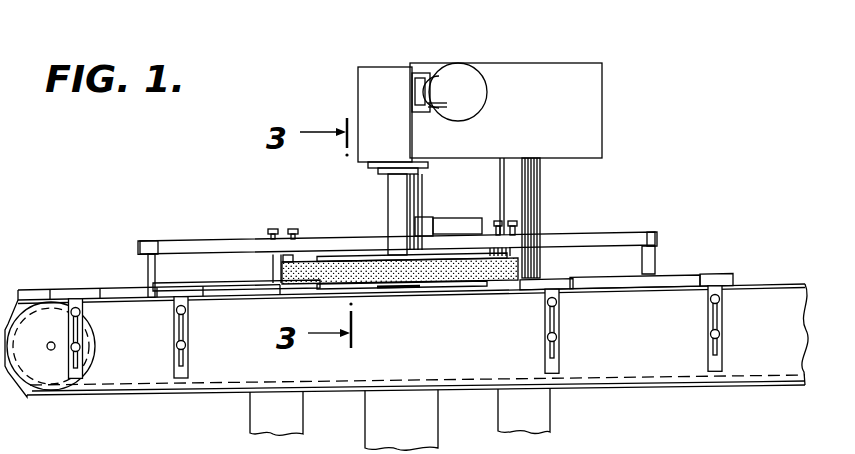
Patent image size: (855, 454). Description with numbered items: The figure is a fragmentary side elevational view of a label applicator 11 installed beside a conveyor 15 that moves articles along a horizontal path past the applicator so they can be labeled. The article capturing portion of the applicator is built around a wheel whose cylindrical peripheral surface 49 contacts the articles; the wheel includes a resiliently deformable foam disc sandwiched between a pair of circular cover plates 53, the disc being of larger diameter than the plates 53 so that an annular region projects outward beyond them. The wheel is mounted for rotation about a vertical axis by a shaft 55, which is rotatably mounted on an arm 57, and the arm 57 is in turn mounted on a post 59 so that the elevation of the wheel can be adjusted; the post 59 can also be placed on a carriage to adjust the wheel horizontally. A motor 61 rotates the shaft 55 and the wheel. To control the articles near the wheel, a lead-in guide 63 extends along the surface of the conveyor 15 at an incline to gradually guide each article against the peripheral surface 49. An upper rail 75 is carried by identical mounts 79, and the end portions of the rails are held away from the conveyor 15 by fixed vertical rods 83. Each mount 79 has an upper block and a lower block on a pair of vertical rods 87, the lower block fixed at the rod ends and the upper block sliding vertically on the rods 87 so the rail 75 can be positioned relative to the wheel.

The label applicator 11 is at (238, 171).
The conveyor 15 is at (790, 276).
The cylindrical peripheral surface 49 is at (433, 274).
The circular cover plates 53 is at (338, 257).
The shaft 55 is at (388, 184).
The arm 57 is at (528, 70).
The post 59 is at (532, 184).
The motor 61 is at (464, 72).
The lead-in guide 63 is at (662, 273).
The upper rail 75 is at (207, 216).
The mounts 79 is at (298, 228).
The fixed vertical rods 83 is at (140, 265).
The vertical rods 87 is at (275, 264).